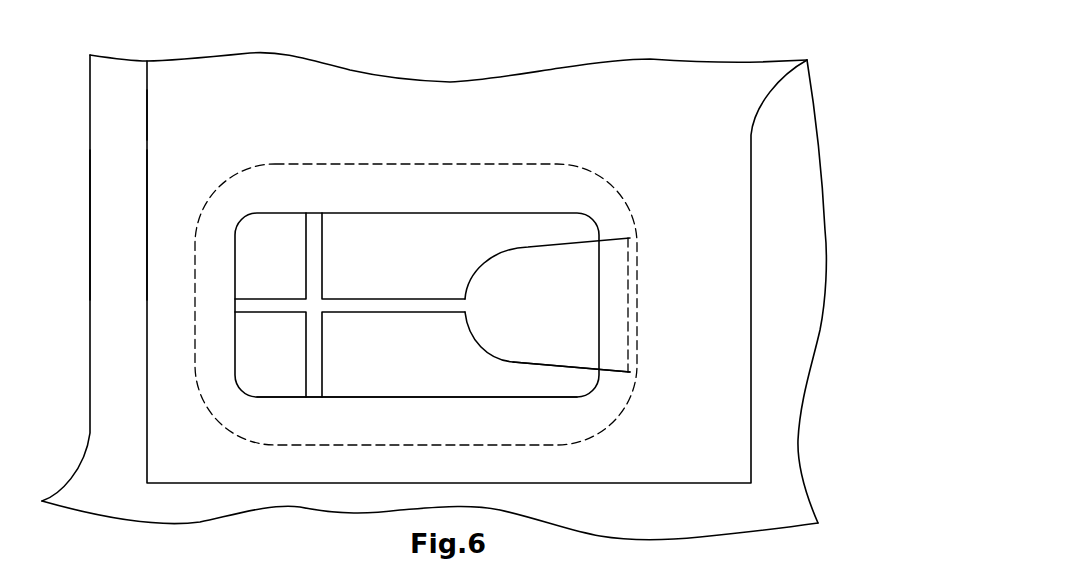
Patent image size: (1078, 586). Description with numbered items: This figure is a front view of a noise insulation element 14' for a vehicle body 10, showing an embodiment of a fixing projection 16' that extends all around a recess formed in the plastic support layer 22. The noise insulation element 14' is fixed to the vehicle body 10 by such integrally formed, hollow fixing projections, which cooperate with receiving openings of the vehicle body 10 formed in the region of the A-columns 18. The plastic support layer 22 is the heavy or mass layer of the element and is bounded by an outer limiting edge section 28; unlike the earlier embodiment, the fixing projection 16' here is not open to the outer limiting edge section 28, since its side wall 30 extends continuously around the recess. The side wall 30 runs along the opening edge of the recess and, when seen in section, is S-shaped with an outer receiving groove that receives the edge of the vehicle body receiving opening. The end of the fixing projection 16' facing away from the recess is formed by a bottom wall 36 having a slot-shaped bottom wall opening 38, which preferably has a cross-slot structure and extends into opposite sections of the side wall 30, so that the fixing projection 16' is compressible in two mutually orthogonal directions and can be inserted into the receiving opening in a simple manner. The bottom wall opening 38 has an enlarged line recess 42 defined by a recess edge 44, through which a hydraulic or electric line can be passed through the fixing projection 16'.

The vehicle body 10 is at (224, 498).
The noise insulation element 14' is at (848, 291).
The fixing projection 16' is at (416, 263).
The A-column 18 is at (137, 256).
The plastic support layer 22 is at (545, 110).
The outer limiting edge section 28 is at (147, 121).
The side wall 30 is at (395, 386).
The bottom wall 36 is at (413, 252).
The bottom wall opening 38 is at (345, 267).
The line recess 42 is at (545, 287).
The recess edge 44 is at (513, 362).